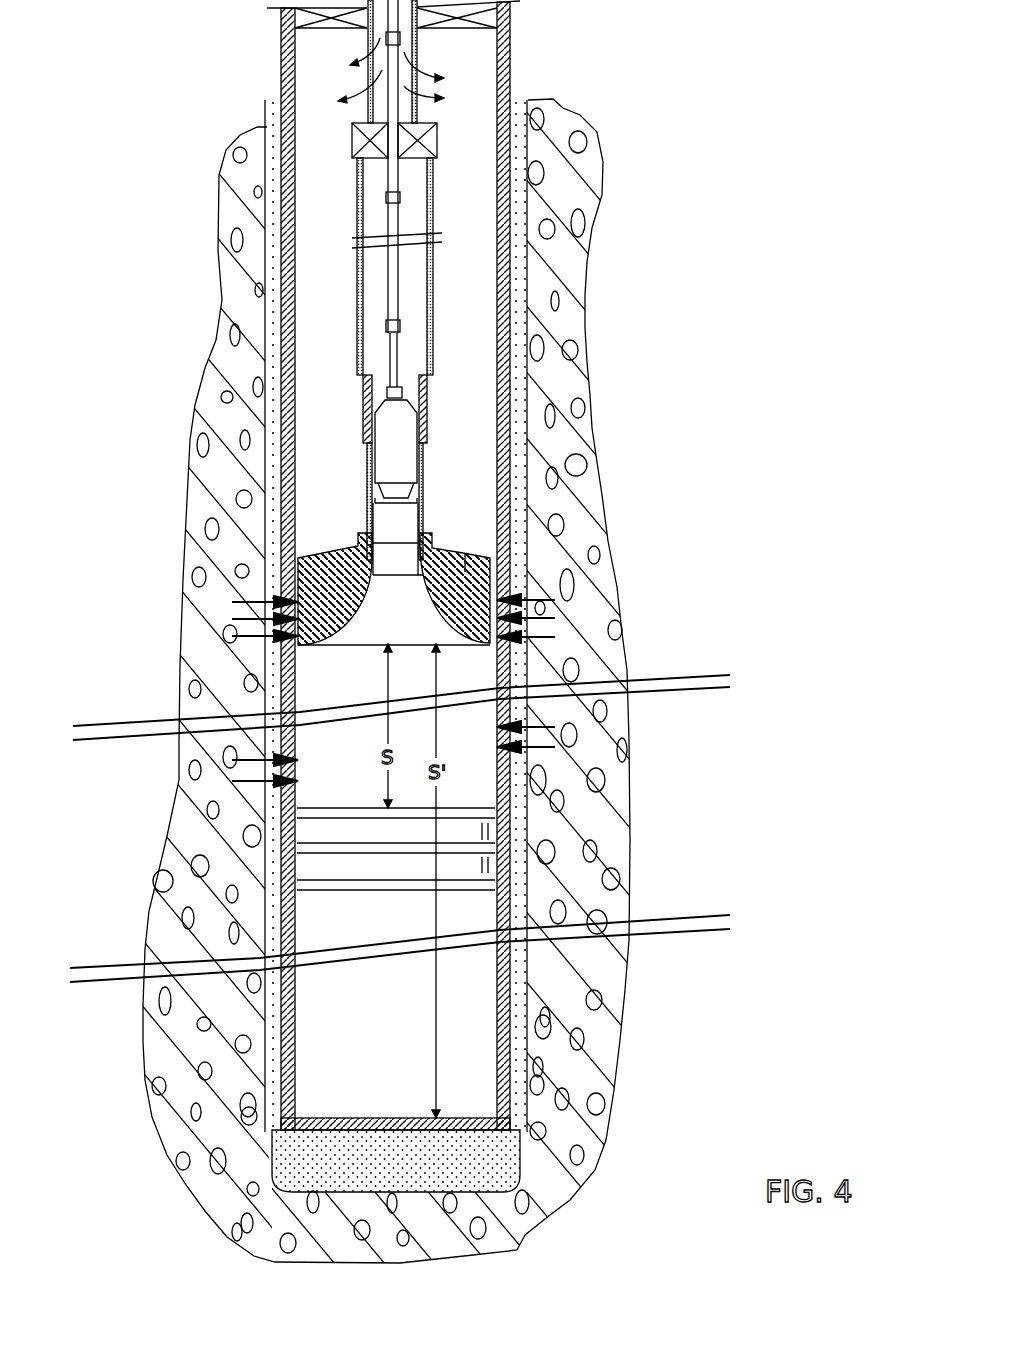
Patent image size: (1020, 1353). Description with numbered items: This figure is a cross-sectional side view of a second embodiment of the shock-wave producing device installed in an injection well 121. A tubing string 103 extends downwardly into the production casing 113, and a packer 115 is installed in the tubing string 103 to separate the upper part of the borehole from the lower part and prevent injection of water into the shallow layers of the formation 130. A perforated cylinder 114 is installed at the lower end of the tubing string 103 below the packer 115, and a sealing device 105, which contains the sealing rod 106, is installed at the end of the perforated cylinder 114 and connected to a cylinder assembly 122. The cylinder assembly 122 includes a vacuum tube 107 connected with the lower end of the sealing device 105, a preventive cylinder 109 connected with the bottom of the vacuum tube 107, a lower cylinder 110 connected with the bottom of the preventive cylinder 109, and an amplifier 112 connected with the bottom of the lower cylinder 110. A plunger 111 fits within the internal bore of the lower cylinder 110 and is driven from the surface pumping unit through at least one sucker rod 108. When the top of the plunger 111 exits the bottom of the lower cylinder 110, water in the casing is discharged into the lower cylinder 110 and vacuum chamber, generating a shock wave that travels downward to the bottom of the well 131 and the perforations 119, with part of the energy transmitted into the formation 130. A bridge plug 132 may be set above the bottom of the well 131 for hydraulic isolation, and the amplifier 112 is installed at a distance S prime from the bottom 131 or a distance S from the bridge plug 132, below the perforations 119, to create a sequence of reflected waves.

The tubing string 103 is at (417, 43).
The sealing device 105 is at (350, 140).
The sealing rod 106 is at (393, 180).
The vacuum tube 107 is at (360, 303).
The sucker rod 108 is at (395, 268).
The preventive cylinder 109 is at (368, 402).
The lower cylinder 110 is at (368, 478).
The plunger 111 is at (390, 430).
The amplifier 112 is at (463, 543).
The production casing 113 is at (290, 580).
The perforated cylinder 114 is at (417, 106).
The packer 115 is at (423, 32).
The perforations 119 is at (540, 612).
The injection well 121 is at (465, 170).
The cylinder assembly 122 is at (430, 218).
The formation 130 is at (560, 1155).
The bottom of the well 131 is at (388, 1115).
The bridge plug 132 is at (482, 828).